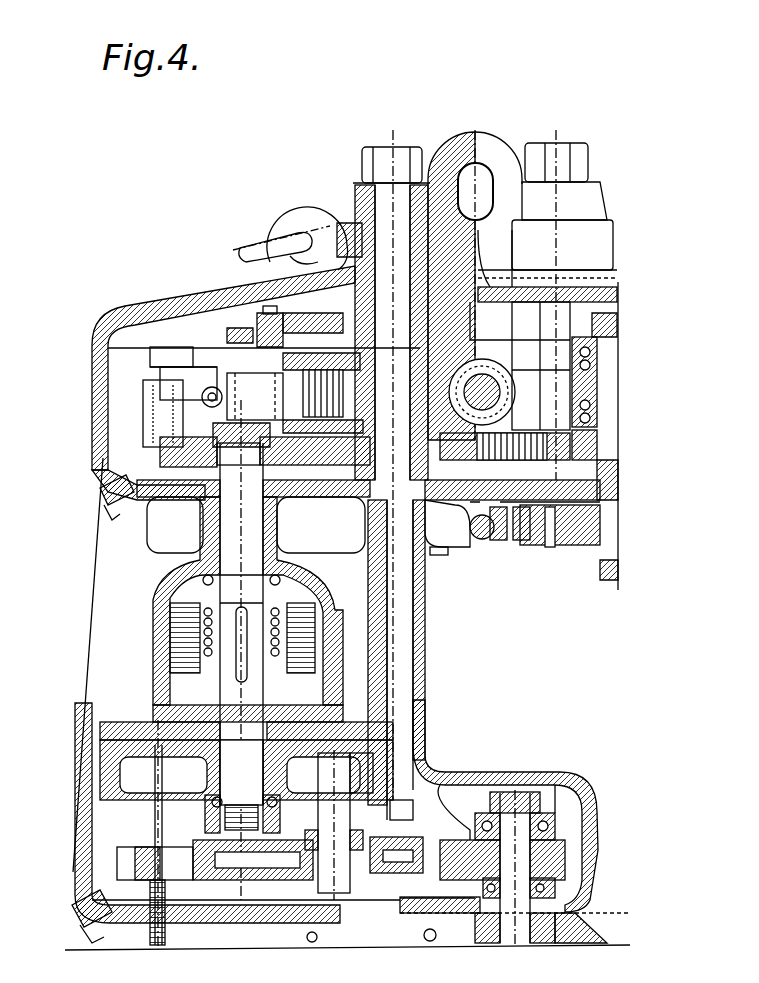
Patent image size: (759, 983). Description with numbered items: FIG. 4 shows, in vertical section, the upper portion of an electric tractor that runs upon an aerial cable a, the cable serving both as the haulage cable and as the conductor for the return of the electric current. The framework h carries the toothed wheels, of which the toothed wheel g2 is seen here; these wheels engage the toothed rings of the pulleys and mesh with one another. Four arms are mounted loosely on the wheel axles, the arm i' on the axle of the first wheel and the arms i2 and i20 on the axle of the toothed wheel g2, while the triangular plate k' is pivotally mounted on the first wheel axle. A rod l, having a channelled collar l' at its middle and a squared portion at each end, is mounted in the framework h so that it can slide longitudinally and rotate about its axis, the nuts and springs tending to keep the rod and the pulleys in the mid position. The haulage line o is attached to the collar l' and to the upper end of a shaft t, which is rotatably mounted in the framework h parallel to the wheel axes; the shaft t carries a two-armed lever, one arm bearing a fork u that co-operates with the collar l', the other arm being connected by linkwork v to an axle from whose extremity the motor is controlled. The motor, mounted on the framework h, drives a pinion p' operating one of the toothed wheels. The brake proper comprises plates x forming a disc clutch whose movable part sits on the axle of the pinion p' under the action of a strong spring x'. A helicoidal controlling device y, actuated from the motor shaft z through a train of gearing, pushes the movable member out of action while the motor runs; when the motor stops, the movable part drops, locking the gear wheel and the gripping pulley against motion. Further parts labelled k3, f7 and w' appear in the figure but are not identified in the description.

The framework h is at (92, 362).
The haulage line o is at (262, 245).
The shaft t is at (334, 248).
The linkwork v is at (162, 306).
The triangular plate k' is at (187, 330).
The arm i' is at (281, 304).
The fork u is at (417, 383).
The rod l is at (475, 285).
The block k3 is at (542, 352).
The arm i20 is at (622, 298).
The arm i2 is at (580, 397).
The pinion p' is at (197, 465).
The spring x' is at (123, 601).
The plates x is at (183, 601).
The toothed wheel g2 is at (317, 498).
The channelled collar l' is at (447, 546).
The cable a is at (487, 535).
The flange f7 is at (460, 530).
The helicoidal controlling device y is at (323, 732).
The gear shaft w' is at (222, 820).
The motor shaft z is at (560, 913).